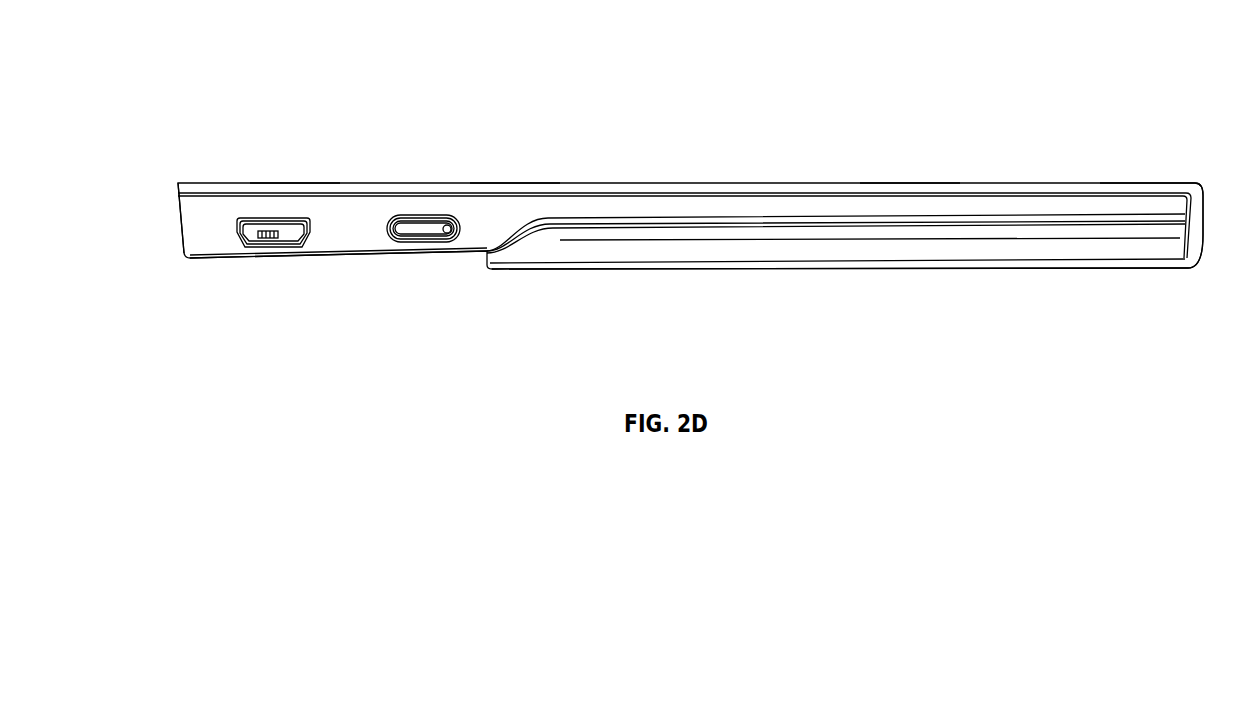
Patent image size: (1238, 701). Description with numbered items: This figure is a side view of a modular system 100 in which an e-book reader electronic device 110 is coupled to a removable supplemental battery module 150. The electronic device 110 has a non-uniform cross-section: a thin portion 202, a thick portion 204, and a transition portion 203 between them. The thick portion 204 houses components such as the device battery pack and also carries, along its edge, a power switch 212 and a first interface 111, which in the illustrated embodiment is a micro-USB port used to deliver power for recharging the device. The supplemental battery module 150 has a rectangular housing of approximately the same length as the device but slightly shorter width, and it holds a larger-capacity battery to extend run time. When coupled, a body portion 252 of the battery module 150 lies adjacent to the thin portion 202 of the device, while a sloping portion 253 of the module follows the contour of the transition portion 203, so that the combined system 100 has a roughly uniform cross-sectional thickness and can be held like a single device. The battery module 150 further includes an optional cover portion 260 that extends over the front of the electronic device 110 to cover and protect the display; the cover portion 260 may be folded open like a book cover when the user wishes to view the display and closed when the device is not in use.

The modular system 100 is at (150, 82).
The electronic device 110 is at (180, 228).
The first interface 111 is at (271, 247).
The power switch 212 is at (420, 243).
The thick portion 204 is at (290, 168).
The transition portion 203 is at (508, 168).
The thin portion 202 is at (903, 168).
The cover portion 260 is at (1108, 183).
The sloping portion 253 is at (520, 296).
The body portion 252 is at (903, 298).
The supplemental battery module 150 is at (778, 270).